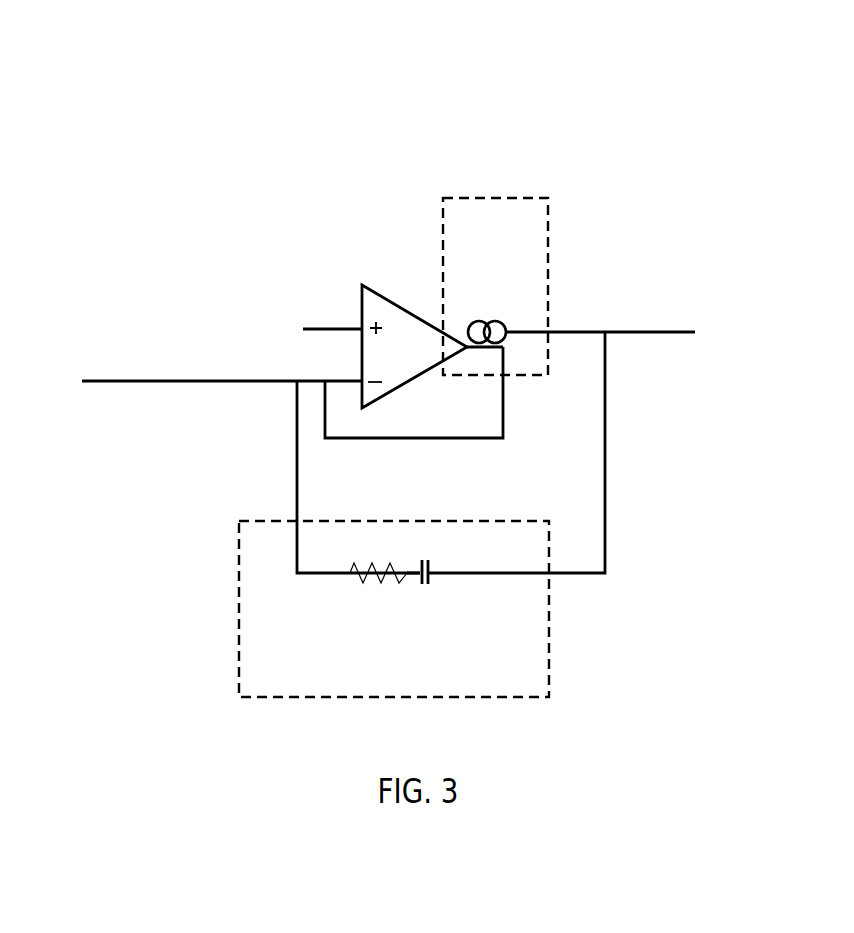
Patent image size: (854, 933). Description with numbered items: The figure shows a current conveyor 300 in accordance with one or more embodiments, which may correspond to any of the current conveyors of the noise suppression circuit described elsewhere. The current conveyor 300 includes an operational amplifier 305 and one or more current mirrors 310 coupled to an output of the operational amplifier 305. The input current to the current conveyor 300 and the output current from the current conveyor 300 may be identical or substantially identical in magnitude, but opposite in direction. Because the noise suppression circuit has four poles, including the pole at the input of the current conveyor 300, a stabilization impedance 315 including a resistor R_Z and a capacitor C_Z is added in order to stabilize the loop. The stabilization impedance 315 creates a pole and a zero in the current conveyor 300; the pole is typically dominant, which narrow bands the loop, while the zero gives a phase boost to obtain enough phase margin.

The current conveyor 300 is at (6, 160).
The operational amplifier 305 is at (399, 344).
The current mirrors 310 is at (475, 294).
The stabilization impedance 315 is at (382, 687).